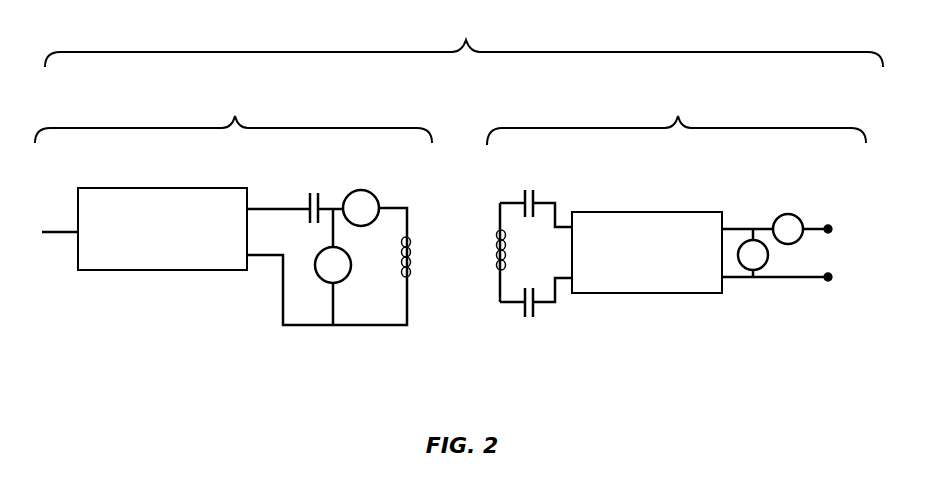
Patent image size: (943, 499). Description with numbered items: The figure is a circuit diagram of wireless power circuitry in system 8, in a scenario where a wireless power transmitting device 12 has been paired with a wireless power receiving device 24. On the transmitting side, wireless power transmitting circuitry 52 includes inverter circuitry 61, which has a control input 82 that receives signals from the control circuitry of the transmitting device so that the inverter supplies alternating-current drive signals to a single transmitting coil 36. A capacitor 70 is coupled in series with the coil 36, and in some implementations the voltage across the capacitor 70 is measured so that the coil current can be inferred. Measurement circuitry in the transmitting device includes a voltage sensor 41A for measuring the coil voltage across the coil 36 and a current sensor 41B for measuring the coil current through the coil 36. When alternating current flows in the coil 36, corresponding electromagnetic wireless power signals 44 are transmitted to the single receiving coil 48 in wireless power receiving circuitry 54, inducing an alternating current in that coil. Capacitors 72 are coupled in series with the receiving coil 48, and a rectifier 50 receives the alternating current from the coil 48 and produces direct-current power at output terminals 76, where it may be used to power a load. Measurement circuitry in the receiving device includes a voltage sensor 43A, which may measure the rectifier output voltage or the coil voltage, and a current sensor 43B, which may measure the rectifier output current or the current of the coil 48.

The wireless power system 8 is at (464, 40).
The wireless power transmitting device 12 is at (233, 116).
The wireless power receiving device 24 is at (676, 117).
The control input 82 is at (50, 233).
The inverter circuitry 61 is at (120, 270).
The wireless power transmitting circuitry 52 is at (249, 325).
The capacitor 70 is at (314, 188).
The current sensor 41B is at (372, 192).
The voltage sensor 41A is at (337, 283).
The transmitting coil 36 is at (419, 232).
The wireless power signals 44 is at (418, 243).
The receiving coil 48 is at (489, 276).
The capacitors 72 is at (528, 186).
The wireless power receiving circuitry 54 is at (630, 306).
The rectifier 50 is at (663, 212).
The output terminals 76 is at (833, 233).
The current sensor 43B is at (788, 214).
The voltage sensor 43A is at (760, 266).